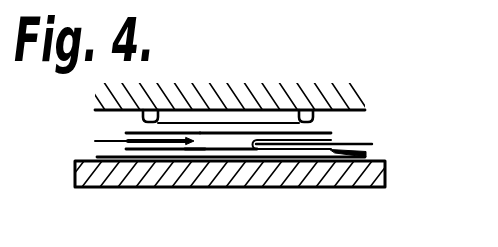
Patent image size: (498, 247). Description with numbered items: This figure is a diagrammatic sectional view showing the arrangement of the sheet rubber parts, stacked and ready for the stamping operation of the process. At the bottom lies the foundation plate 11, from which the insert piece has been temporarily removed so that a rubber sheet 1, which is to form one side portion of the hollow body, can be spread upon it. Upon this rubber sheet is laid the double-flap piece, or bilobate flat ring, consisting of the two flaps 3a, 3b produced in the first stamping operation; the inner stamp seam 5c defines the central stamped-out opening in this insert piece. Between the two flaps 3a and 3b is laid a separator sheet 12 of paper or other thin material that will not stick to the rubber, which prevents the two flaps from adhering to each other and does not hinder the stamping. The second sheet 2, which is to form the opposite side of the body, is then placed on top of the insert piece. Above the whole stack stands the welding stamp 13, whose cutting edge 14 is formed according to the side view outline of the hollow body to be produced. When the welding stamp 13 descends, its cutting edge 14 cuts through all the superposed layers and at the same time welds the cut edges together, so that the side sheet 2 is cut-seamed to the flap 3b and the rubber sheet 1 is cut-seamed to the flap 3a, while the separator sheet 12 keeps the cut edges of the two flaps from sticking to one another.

The rubber sheet 1 is at (197, 150).
The second sheet 2 is at (126, 134).
The flap of insert piece 3a is at (144, 149).
The flap of insert piece 3b is at (126, 140).
The inner stamp seam 5c is at (253, 133).
The foundation plate 11 is at (275, 181).
The separator sheet 12 is at (95, 142).
The welding stamp 13 is at (225, 98).
The cutting edge 14 is at (152, 119).